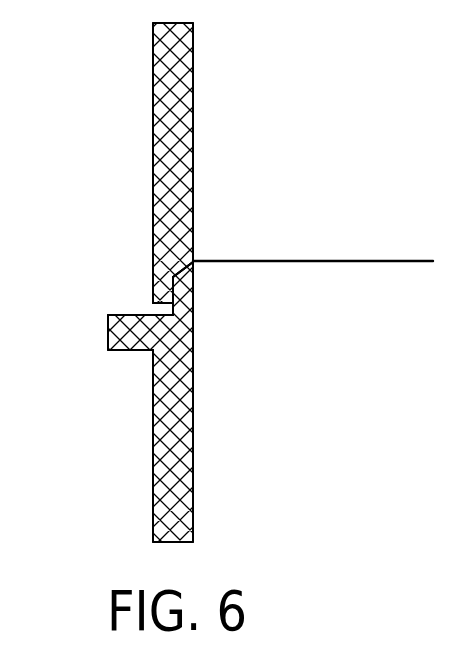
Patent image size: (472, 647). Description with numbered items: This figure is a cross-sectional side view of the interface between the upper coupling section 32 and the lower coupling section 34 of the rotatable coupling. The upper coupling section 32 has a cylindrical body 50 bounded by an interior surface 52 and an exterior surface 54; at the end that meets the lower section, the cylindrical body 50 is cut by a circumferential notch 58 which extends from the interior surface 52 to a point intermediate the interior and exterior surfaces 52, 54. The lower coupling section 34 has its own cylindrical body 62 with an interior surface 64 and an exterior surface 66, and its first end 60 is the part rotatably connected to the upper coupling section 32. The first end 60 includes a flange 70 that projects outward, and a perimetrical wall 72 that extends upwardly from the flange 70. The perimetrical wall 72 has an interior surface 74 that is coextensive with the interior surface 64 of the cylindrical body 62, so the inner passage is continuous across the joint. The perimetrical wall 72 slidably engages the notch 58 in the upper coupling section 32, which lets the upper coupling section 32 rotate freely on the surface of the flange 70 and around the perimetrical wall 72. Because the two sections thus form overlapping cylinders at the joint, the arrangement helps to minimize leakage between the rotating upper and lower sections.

The upper coupling section 32 is at (136, 184).
The lower coupling section 34 is at (136, 518).
The cylindrical body 50 is at (160, 43).
The interior surface 52 is at (194, 100).
The exterior surface 54 is at (152, 100).
The circumferential notch 58 is at (194, 257).
The first end 60 is at (137, 312).
The cylindrical body 62 is at (182, 515).
The interior surface 64 is at (194, 432).
The exterior surface 66 is at (152, 445).
The flange 70 is at (108, 342).
The perimetrical wall 72 is at (186, 282).
The interior surface 74 is at (190, 270).